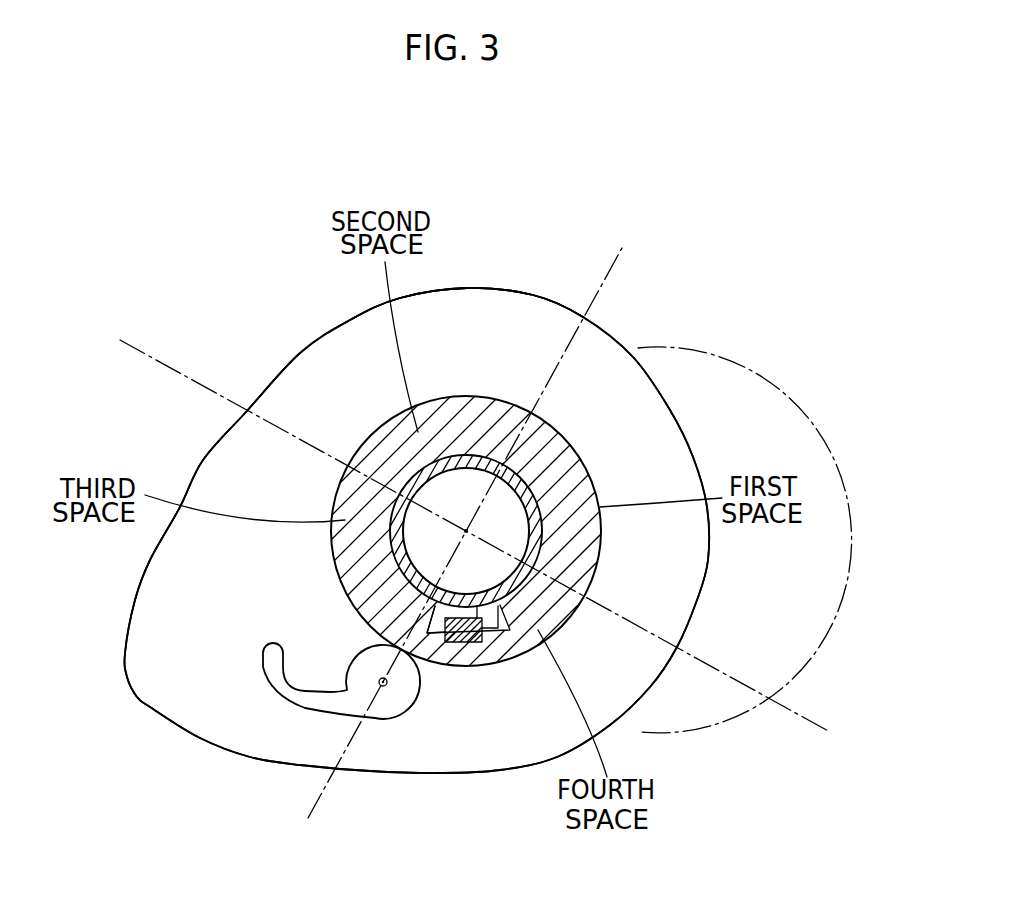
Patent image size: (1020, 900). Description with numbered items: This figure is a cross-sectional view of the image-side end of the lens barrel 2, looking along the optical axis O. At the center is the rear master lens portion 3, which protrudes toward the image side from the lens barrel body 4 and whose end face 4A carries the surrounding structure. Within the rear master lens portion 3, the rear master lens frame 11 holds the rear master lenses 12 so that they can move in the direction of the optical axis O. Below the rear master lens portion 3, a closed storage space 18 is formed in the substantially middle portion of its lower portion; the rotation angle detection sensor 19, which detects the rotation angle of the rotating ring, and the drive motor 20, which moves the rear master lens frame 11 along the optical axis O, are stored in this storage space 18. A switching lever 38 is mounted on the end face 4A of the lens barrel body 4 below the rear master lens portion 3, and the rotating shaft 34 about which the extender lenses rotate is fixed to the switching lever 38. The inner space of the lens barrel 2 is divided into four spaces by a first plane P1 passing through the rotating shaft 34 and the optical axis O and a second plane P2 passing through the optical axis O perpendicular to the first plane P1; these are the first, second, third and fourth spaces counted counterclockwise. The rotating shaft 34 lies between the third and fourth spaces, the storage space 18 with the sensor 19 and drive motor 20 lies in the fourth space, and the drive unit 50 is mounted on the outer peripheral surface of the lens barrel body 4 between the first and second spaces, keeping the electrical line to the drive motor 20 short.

The lens barrel 2 is at (293, 356).
The rear master lens portion 3 is at (555, 427).
The lens barrel body 4 is at (528, 273).
The end face 4A is at (494, 330).
The rear master lens frame 11 is at (560, 488).
The rear master lenses 12 is at (508, 530).
The storage space 18 is at (443, 640).
The rotation angle detection sensor 19 is at (482, 642).
The drive motor 20 is at (500, 608).
The rotating shaft 34 is at (386, 688).
The switching lever 38 is at (312, 695).
The drive unit 50 is at (752, 416).
The optical axis O is at (466, 531).
The first plane P1 is at (323, 795).
The second plane P2 is at (786, 703).